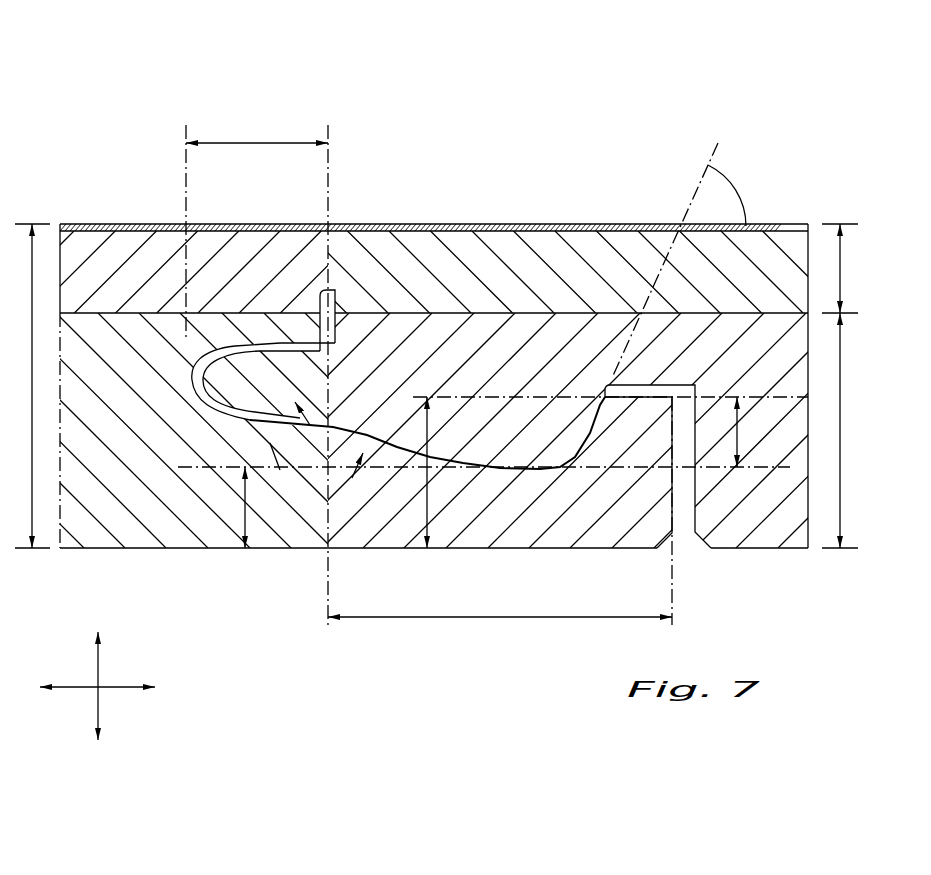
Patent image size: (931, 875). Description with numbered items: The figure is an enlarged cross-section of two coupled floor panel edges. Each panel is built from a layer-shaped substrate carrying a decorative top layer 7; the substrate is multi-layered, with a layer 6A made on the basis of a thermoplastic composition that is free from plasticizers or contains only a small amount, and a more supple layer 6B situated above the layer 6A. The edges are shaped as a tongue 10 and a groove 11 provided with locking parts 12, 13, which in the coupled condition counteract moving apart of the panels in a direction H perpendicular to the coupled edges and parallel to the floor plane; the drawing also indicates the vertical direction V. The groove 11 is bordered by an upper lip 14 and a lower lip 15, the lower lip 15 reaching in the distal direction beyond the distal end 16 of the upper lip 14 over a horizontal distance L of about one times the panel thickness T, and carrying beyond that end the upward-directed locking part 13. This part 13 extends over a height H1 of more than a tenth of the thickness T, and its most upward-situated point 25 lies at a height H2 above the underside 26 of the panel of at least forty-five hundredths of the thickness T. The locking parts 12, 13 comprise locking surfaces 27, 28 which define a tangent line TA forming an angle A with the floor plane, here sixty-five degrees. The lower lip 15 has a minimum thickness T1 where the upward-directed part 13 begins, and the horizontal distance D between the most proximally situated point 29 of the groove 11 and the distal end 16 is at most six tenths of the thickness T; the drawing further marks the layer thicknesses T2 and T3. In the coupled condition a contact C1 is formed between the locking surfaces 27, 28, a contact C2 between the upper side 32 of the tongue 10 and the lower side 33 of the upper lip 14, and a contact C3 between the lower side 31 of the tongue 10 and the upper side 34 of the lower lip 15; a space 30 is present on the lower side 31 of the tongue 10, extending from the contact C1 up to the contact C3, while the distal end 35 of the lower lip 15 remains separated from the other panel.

The layer 6A is at (113, 343).
The more supple layer 6B is at (88, 240).
The decorative top layer 7 is at (165, 224).
The tongue 10 is at (348, 400).
The groove 11 is at (225, 400).
The locking part 12 is at (565, 425).
The upward-directed locking part 13 is at (607, 430).
The upper lip 14 is at (268, 340).
The lower lip 15 is at (388, 500).
The distal end of the upper lip 16 is at (340, 220).
The most upward-situated point 25 is at (638, 383).
The underside 26 is at (282, 558).
The locking surface 27 is at (605, 455).
The locking surface 28 is at (567, 420).
The most proximally situated point of the groove 29 is at (122, 260).
The space 30 is at (398, 447).
The lower side of the tongue 31 is at (325, 488).
The upper side of the tongue 32 is at (147, 224).
The lower side of the upper lip 33 is at (235, 455).
The upper side of the lower lip 34 is at (455, 317).
The distal end of the lower lip 35 is at (680, 453).
The contact C1 is at (130, 265).
The contact C2 is at (223, 333).
The contact C3 is at (205, 445).
The horizontal distance D is at (257, 371).
The horizontal distance L is at (500, 521).
The thickness of the floor panel T is at (31, 386).
The minimum thickness of the lower lip T1 is at (228, 507).
The thickness T2 is at (848, 268).
The thickness T3 is at (854, 430).
The height H1 is at (493, 432).
The height H2 is at (447, 472).
The angle A is at (733, 194).
The tangent line TA is at (690, 205).
The vertical direction V is at (98, 678).
The direction H is at (120, 690).